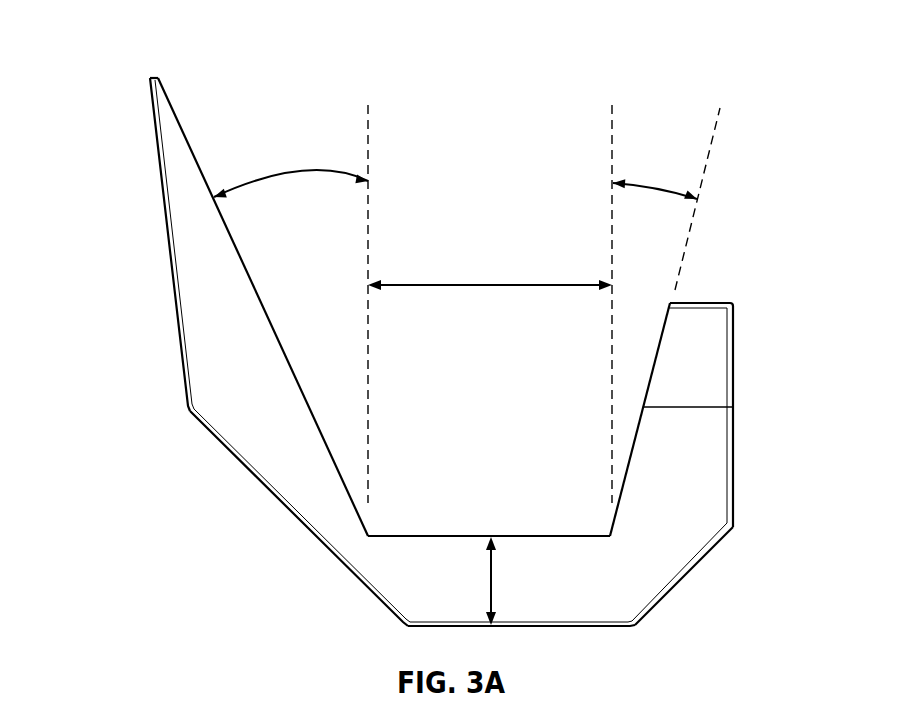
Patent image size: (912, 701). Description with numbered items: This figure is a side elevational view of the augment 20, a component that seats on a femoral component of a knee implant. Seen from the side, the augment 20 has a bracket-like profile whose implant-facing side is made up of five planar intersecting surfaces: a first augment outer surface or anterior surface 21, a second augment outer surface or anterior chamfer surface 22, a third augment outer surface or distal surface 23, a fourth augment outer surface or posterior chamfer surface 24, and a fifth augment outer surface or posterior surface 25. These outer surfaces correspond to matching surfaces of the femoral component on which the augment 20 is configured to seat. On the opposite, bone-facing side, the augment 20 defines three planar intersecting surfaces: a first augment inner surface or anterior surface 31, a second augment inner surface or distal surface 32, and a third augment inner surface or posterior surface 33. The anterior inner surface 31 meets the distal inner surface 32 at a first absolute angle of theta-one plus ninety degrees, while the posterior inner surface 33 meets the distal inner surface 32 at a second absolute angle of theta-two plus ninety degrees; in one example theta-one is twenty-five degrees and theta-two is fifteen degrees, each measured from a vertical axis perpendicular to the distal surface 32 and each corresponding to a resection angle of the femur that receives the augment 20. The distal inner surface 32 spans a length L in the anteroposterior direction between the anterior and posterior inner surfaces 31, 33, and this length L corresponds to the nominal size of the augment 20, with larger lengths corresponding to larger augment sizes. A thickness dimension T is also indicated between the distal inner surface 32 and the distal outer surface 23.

The augment 20 is at (120, 38).
The first augment outer surface 21 is at (166, 238).
The second augment outer surface 22 is at (304, 527).
The third augment outer surface 23 is at (583, 628).
The fourth augment outer surface 24 is at (687, 576).
The fifth augment outer surface 25 is at (735, 442).
The first augment inner surface 31 is at (252, 283).
The second augment inner surface 32 is at (478, 536).
The third augment inner surface 33 is at (650, 384).
The length L is at (500, 282).
The thickness dimension T is at (493, 582).